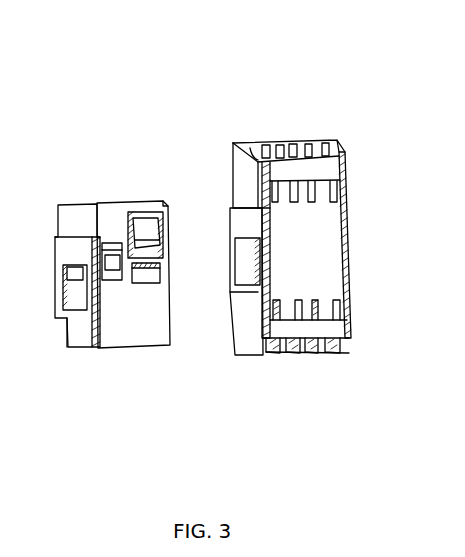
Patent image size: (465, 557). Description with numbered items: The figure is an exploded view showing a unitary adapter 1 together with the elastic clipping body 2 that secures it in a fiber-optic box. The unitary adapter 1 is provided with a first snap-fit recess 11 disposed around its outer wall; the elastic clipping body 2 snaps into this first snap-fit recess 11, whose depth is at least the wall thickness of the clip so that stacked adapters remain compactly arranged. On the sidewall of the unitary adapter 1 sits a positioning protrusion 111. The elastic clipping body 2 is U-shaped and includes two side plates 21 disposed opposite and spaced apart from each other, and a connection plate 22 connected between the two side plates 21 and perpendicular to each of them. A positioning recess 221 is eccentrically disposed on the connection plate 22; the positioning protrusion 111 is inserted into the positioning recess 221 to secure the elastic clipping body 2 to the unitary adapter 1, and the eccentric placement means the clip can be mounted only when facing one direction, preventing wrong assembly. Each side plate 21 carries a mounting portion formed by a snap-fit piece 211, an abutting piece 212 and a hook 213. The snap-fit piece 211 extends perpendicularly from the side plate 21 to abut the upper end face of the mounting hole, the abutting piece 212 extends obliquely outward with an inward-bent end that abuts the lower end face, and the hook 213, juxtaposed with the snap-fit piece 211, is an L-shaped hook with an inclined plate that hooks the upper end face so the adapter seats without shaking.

The unitary adapter 1 is at (333, 148).
The first snap-fit recess 11 is at (330, 258).
The positioning protrusion 111 is at (248, 268).
The elastic clipping body 2 is at (187, 107).
The side plate 21 is at (124, 211).
The snap-fit piece 211 is at (225, 222).
The abutting piece 212 is at (151, 226).
The hook 213 is at (122, 268).
The connection plate 22 is at (73, 240).
The positioning recess 221 is at (83, 292).